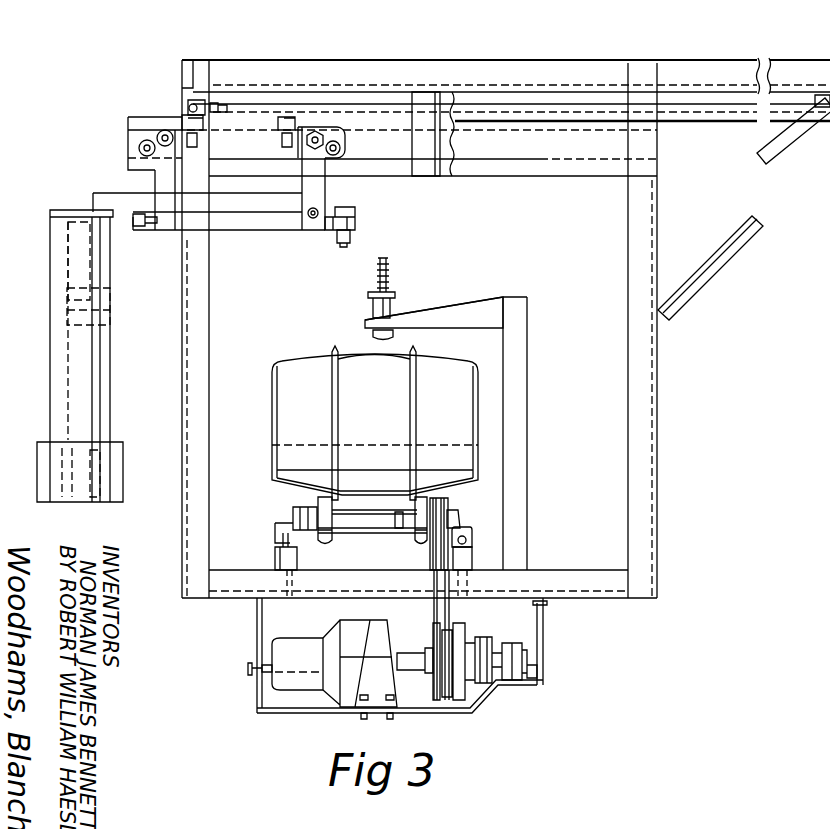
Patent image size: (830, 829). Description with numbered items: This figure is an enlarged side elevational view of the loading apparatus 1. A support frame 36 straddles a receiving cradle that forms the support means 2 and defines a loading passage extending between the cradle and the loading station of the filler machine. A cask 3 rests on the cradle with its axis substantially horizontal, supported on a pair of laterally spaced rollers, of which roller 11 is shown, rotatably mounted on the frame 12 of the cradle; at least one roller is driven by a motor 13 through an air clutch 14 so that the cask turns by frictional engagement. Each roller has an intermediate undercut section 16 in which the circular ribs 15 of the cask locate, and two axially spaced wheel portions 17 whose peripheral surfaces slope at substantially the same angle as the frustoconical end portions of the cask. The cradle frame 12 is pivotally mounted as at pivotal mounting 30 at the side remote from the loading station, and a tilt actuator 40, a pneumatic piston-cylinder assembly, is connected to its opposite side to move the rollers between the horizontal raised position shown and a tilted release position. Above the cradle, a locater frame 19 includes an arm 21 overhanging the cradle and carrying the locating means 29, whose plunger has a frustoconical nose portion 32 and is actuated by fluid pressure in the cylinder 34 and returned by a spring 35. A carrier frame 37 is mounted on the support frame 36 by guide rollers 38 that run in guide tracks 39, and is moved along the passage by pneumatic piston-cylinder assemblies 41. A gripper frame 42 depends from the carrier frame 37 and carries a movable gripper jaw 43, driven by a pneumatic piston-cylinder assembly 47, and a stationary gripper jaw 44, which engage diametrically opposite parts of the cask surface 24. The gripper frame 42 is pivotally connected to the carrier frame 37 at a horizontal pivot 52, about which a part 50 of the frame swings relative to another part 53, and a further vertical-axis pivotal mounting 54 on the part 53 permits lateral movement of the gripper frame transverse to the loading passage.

The agitator shaft assembly 1 is at (360, 512).
The support means 2 is at (463, 513).
The cask 3 is at (300, 385).
The roller 11 is at (360, 537).
The frame 12 is at (293, 513).
The motor 13 is at (308, 670).
The air clutch 14 is at (462, 683).
The circular ribs 15 is at (335, 377).
The intermediate undercut section 16 is at (397, 527).
The wheel portions 17 is at (332, 538).
The locater frame 19 is at (514, 404).
The arm 21 is at (467, 317).
The surface 24 is at (370, 363).
The locating means 29 is at (400, 308).
The pivotal mounting 30 is at (473, 542).
The frustoconical nose portion 32 is at (393, 337).
The cylinder 34 is at (368, 308).
The spring 35 is at (387, 273).
The support frame 36 is at (522, 75).
The carrier frame 37 is at (165, 183).
The guide rollers 38 is at (333, 140).
The guide tracks 39 is at (242, 120).
The tilt actuator 40 is at (275, 557).
The pneumatic piston-cylinder assemblies 41 is at (677, 110).
The gripper frame 42 is at (114, 389).
The gripper jaw 43 is at (103, 312).
The gripper jaw 44 is at (117, 472).
The pneumatic piston-cylinder assembly 47 is at (83, 262).
The part 50 is at (230, 213).
The pivot 52 is at (312, 222).
The part 53 is at (338, 205).
The pivotal mounting 54 is at (337, 237).